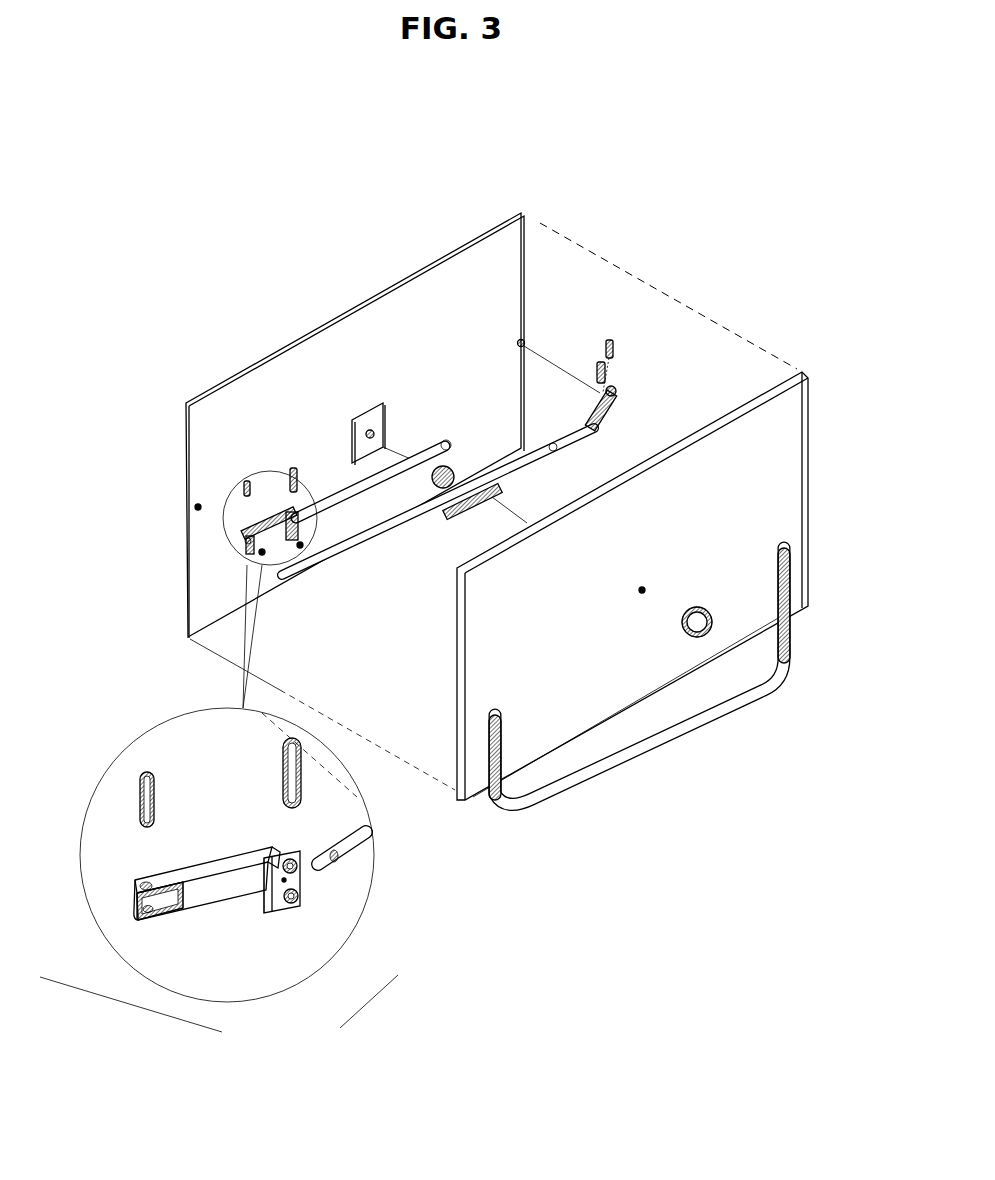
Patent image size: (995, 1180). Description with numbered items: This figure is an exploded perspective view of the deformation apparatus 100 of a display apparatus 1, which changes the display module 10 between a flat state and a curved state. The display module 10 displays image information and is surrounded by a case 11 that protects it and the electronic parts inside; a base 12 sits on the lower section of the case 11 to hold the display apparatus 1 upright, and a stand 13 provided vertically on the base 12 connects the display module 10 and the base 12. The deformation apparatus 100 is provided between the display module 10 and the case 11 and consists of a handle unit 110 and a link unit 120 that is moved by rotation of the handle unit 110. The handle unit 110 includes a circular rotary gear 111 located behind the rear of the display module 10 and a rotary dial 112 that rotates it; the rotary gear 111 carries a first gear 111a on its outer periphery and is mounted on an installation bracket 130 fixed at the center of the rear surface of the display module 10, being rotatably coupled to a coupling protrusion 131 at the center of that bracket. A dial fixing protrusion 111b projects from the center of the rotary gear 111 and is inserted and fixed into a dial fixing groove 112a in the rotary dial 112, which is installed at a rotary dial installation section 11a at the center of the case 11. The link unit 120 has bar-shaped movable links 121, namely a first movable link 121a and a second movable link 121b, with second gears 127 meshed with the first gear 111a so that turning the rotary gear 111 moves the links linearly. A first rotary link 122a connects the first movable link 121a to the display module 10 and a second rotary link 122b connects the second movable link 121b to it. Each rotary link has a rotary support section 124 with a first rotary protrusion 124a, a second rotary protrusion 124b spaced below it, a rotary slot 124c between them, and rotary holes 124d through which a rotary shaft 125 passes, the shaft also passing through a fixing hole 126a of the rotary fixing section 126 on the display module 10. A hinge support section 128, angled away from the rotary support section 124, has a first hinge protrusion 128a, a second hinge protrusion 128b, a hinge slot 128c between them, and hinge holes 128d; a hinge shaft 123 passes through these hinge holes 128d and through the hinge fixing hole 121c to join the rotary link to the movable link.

The display apparatus 1 is at (663, 116).
The display module 10 is at (455, 250).
The deformation apparatus 100 is at (622, 258).
The case 11 is at (812, 456).
The rotary dial installation section 11a is at (643, 586).
The base 12 is at (718, 721).
The stand 13 is at (488, 742).
The handle unit 110 is at (595, 697).
The rotary gear 111 is at (438, 500).
The first gear 111a is at (448, 447).
The dial fixing protrusion 111b is at (455, 472).
The rotary dial 112 is at (697, 606).
The dial fixing groove 112a is at (683, 624).
The link unit 120 is at (333, 618).
The movable links 121 is at (403, 392).
The first movable link 121a is at (423, 452).
The second movable link 121b is at (553, 445).
The hinge fixing hole 121c is at (339, 862).
The first rotary link 122a is at (266, 558).
The second rotary link 122b is at (618, 409).
The hinge shaft 123 is at (298, 479).
The rotary support section 124 is at (252, 558).
The first rotary protrusion 124a is at (139, 922).
The second rotary protrusion 124b is at (170, 912).
The rotary slot 124c is at (151, 913).
The rotary holes 124d is at (240, 541).
The rotary shaft 125 is at (604, 346).
The rotary fixing section 126 is at (517, 340).
The fixing hole 126a is at (195, 507).
The second gears 127 is at (457, 511).
The hinge support section 128 is at (284, 512).
The first hinge protrusion 128a is at (297, 870).
The second hinge protrusion 128b is at (298, 899).
The hinge slot 128c is at (283, 914).
The hinge holes 128d is at (303, 549).
The installation bracket 130 is at (375, 412).
The coupling protrusion 131 is at (364, 436).